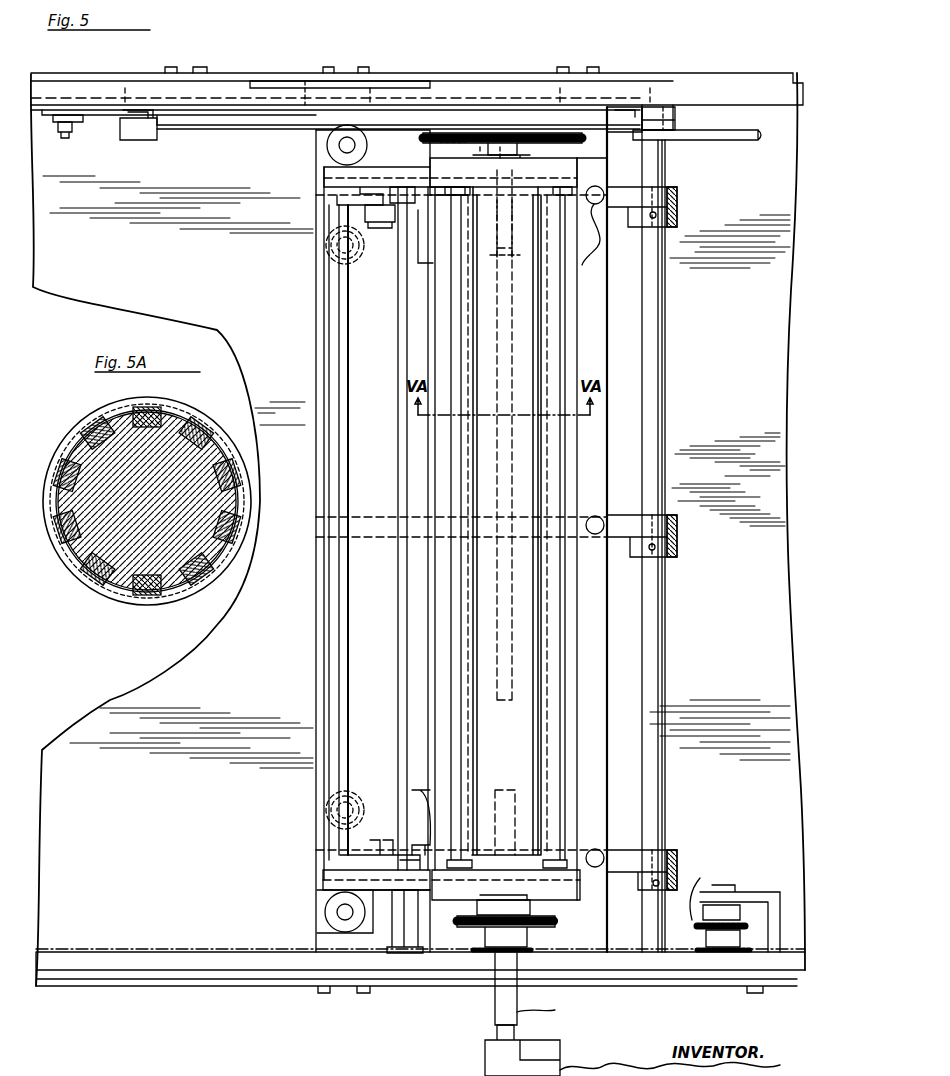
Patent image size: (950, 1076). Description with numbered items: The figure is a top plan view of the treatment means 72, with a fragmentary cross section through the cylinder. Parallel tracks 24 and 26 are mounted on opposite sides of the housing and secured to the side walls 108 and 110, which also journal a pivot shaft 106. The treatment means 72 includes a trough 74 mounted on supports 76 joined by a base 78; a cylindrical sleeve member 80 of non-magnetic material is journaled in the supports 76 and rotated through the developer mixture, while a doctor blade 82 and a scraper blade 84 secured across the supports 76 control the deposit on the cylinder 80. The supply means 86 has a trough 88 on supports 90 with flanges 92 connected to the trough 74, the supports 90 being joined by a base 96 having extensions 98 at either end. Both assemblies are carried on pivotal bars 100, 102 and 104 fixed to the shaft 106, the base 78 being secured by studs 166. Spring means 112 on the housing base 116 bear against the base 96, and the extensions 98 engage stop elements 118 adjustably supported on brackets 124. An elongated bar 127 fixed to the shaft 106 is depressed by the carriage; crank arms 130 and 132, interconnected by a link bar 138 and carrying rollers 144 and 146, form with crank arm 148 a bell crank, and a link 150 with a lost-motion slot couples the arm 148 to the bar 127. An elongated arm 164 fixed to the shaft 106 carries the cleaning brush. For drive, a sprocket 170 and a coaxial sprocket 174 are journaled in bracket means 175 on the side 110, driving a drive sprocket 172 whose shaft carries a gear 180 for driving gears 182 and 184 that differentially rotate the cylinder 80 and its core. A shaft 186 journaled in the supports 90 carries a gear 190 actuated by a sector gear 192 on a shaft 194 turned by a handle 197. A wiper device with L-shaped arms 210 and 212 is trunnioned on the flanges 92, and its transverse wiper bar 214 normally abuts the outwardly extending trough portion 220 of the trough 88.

In FIG. 5, the track 24 is at (270, 92).
In FIG. 5, the track 26 is at (128, 962).
In FIG. 5, the treatment means 72 is at (617, 311).
In FIG. 5, the trough 74 is at (580, 720).
In FIG. 5, the support 76 is at (550, 180).
In FIG. 5, the base 78 is at (608, 405).
In FIG. 5, the cylindrical sleeve member 80 is at (540, 635).
In FIG. 5A, the cylindrical sleeve member 80 is at (128, 607).
In FIG. 5, the doctor blade 82 is at (550, 790).
In FIG. 5, the scraper blade 84 is at (453, 732).
In FIG. 5, the supply means 86 is at (330, 618).
In FIG. 5, the trough 88 is at (333, 672).
In FIG. 5, the support 90 is at (380, 185).
In FIG. 5, the flange 92 is at (420, 796).
In FIG. 5, the base 96 is at (314, 776).
In FIG. 5, the extension 98 is at (320, 148).
In FIG. 5, the bar 100 is at (630, 195).
In FIG. 5, the bar 102 is at (628, 530).
In FIG. 5, the bar 104 is at (630, 855).
In FIG. 5, the pivot shaft 106 is at (662, 630).
In FIG. 5, the side wall 108 is at (462, 135).
In FIG. 5, the side wall 110 is at (330, 815).
In FIG. 5, the spring means 112 is at (330, 250).
In FIG. 5, the base 116 is at (165, 806).
In FIG. 5, the stop element 118 is at (332, 157).
In FIG. 5, the bracket 124 is at (362, 82).
In FIG. 5, the elongated bar 127 is at (315, 105).
In FIG. 5, the crank arm 130 is at (647, 118).
In FIG. 5, the crank arm 132 is at (138, 140).
In FIG. 5, the link bar 138 is at (232, 130).
In FIG. 5, the roller 144 is at (675, 94).
In FIG. 5, the roller 146 is at (140, 116).
In FIG. 5, the crank arm 148 is at (100, 122).
In FIG. 5, the link 150 is at (58, 124).
In FIG. 5, the elongated arm 164 is at (754, 140).
In FIG. 5, the stud 166 is at (601, 205).
In FIG. 5, the sprocket 170 is at (708, 878).
In FIG. 5, the drive sprocket 172 is at (498, 932).
In FIG. 5, the sprocket 174 is at (522, 950).
In FIG. 5, the bracket means 175 is at (748, 890).
In FIG. 5, the gear 180 is at (622, 118).
In FIG. 5, the gear 182 is at (480, 925).
In FIG. 5, the gear 184 is at (505, 146).
In FIG. 5, the shaft 186 is at (397, 642).
In FIG. 5, the gear 190 is at (552, 138).
In FIG. 5, the sector gear 192 is at (480, 145).
In FIG. 5, the shaft 194 is at (548, 1020).
In FIG. 5, the handle 197 is at (538, 1066).
In FIG. 5, the arm 210 is at (355, 212).
In FIG. 5, the arm 212 is at (355, 858).
In FIG. 5, the wiper bar 214 is at (356, 675).
In FIG. 5, the trough portion 220 is at (328, 650).